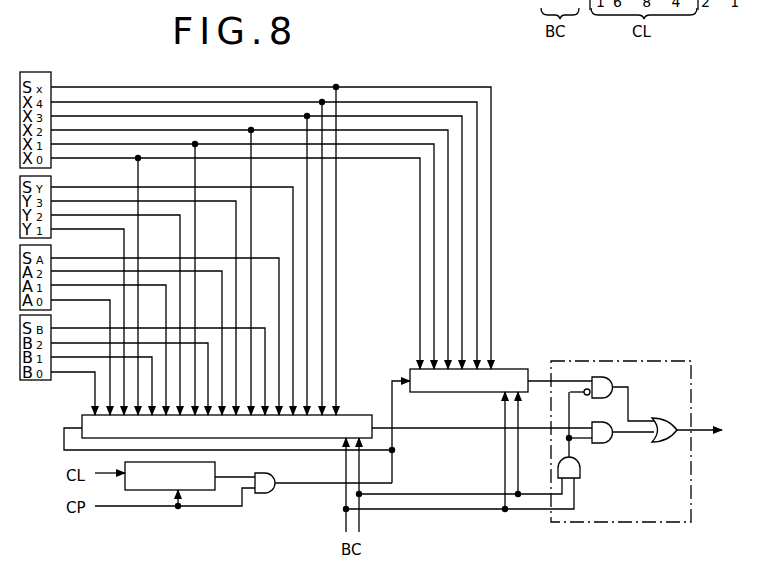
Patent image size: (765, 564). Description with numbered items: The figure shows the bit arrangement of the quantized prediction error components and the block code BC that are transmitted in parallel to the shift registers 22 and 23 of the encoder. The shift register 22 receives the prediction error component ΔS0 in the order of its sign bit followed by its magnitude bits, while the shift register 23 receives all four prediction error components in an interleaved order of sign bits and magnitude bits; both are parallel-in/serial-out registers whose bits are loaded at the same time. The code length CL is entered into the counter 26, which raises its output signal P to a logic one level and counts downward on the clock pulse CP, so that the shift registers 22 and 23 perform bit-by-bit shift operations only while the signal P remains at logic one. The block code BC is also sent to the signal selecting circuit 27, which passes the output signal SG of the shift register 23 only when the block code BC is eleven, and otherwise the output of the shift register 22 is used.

The shift register 22 is at (492, 395).
The shift register 23 is at (361, 415).
The counter 26 is at (215, 464).
The signal selecting circuit 27 is at (615, 361).